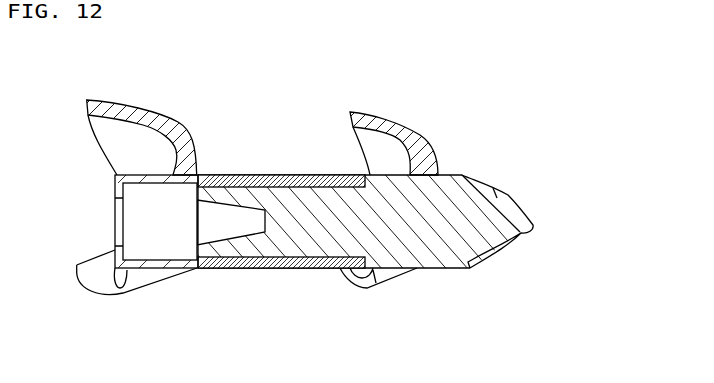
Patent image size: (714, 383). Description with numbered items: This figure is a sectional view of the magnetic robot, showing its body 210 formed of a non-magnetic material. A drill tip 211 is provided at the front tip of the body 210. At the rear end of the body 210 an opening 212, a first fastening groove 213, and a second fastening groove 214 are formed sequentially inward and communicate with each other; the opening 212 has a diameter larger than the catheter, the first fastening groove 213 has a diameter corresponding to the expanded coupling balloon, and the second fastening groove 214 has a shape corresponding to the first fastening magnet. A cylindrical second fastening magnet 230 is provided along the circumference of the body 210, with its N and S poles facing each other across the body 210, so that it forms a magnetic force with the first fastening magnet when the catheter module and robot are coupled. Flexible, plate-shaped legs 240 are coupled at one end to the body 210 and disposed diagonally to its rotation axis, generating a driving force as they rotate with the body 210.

The body 210 is at (430, 258).
The drill tip 211 is at (510, 193).
The opening 212 is at (115, 220).
The first fastening groove 213 is at (157, 240).
The second fastening groove 214 is at (227, 225).
The second fastening magnet 230 is at (275, 173).
The leg 240 is at (397, 122).